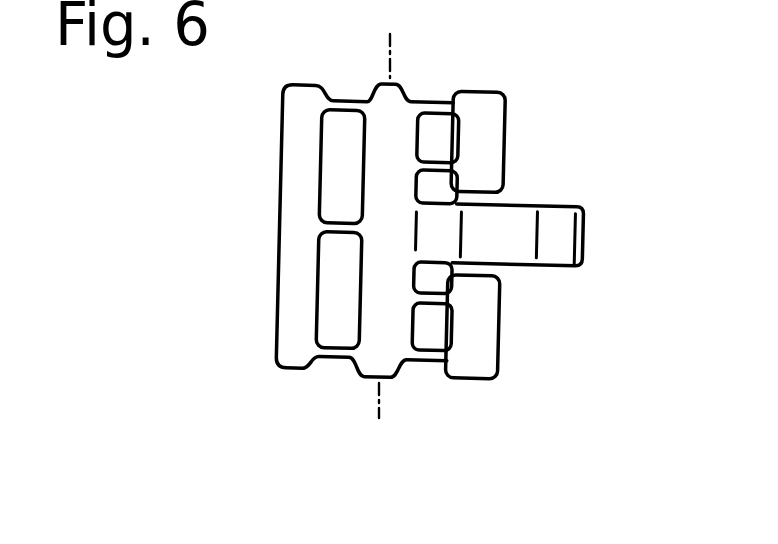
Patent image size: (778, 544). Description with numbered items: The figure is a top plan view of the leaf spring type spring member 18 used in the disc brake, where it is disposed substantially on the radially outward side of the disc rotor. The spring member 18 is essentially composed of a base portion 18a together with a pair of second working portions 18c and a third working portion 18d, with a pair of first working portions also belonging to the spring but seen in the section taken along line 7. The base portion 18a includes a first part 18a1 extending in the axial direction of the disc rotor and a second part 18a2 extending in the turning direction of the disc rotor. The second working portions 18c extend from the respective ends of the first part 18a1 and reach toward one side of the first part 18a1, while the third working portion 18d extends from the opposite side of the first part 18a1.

The section line 7- 7 is at (390, 30).
The spring member 18 is at (596, 230).
The base portion 18a is at (412, 238).
The first part 18a1 is at (378, 175).
The second part 18a2 is at (503, 248).
The second working portions 18c is at (485, 140).
The third working portion 18d is at (297, 228).